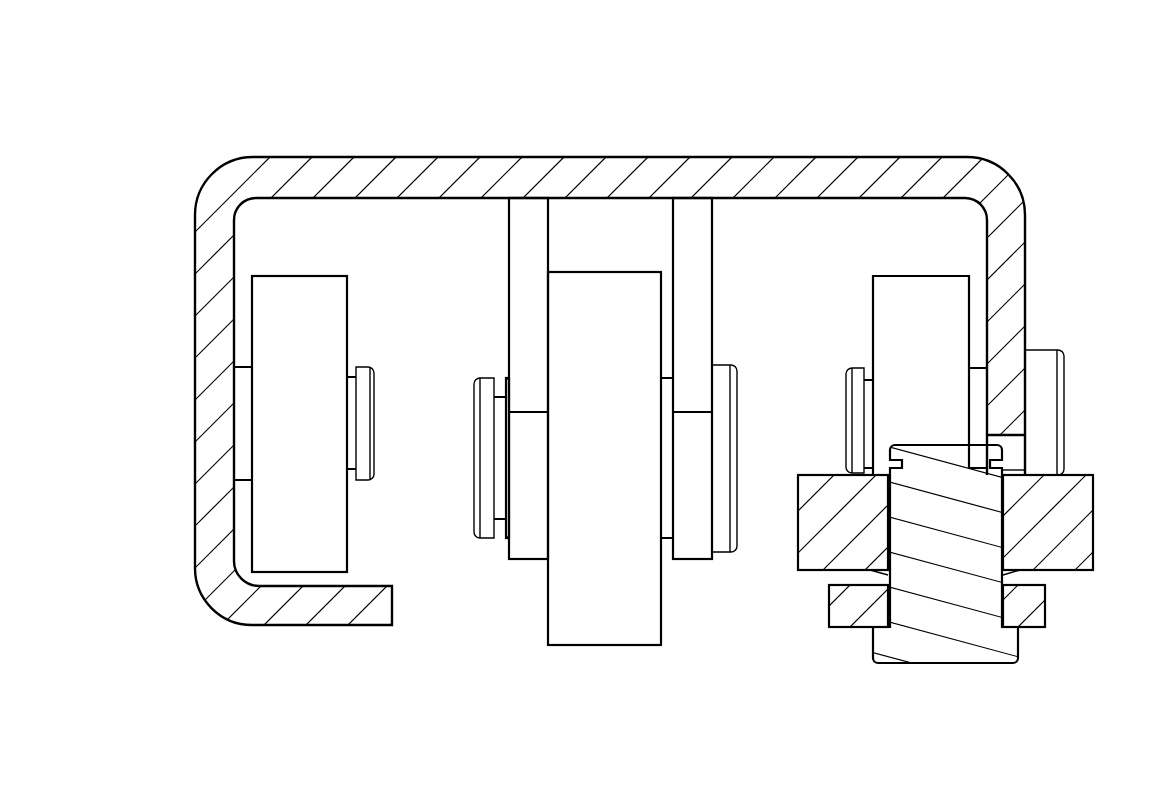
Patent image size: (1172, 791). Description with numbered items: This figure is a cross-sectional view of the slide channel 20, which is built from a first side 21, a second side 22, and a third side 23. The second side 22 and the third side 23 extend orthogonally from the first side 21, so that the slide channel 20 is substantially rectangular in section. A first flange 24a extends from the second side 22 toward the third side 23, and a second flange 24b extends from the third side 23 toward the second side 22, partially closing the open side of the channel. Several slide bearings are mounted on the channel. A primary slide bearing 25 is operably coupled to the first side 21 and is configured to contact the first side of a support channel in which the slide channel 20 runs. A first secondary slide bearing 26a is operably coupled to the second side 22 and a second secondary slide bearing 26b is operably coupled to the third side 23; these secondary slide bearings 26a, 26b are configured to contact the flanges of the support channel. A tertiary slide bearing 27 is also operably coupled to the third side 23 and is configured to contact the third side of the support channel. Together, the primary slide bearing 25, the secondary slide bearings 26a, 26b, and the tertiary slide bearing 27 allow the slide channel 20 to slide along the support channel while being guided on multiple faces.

The slide channel 20 is at (165, 113).
The first side 21 is at (682, 157).
The second side 22 is at (195, 258).
The third side 23 is at (1025, 259).
The first flange 24a is at (332, 618).
The second flange 24b is at (1040, 615).
The primary slide bearing 25 is at (642, 637).
The first secondary slide bearing 26a is at (260, 330).
The second secondary slide bearing 26b is at (962, 330).
The tertiary slide bearing 27 is at (1083, 523).